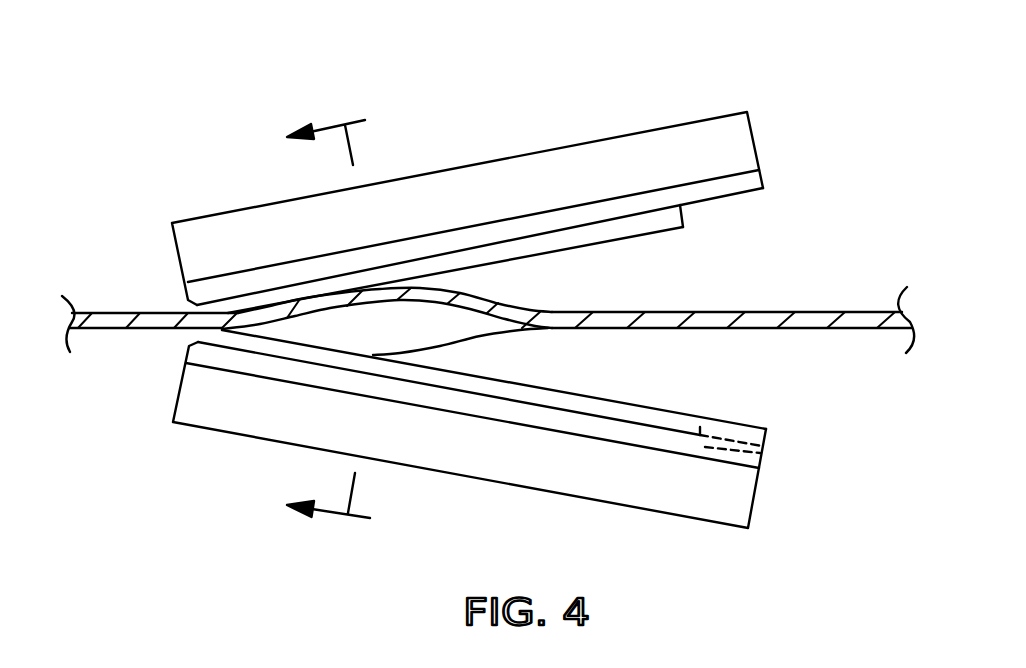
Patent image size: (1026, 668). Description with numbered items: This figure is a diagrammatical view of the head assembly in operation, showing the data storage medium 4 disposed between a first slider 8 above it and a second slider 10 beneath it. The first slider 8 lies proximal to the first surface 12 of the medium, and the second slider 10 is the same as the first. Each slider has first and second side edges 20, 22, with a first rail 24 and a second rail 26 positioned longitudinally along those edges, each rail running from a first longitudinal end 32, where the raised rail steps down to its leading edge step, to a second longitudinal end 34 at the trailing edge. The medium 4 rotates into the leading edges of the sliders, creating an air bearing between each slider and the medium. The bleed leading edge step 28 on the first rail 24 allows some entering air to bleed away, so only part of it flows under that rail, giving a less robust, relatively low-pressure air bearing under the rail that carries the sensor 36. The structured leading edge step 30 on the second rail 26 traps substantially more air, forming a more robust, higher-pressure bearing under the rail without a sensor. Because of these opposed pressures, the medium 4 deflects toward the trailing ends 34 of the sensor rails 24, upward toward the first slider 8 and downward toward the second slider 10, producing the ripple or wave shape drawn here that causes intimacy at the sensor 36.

The data storage medium 4 is at (857, 318).
The first slider 8 is at (717, 142).
The second slider 10 is at (712, 498).
The first surface 12 is at (306, 319).
The first side edge 20 is at (595, 160).
The second side edge 22 is at (555, 472).
The first rail 24 is at (433, 258).
The second rail 26 is at (422, 378).
The bleed leading edge step 28 is at (735, 195).
The structured leading edge step 30 is at (747, 440).
The first longitudinal end 32 is at (687, 213).
The second longitudinal end 34 is at (205, 312).
The sensor 36 is at (283, 305).